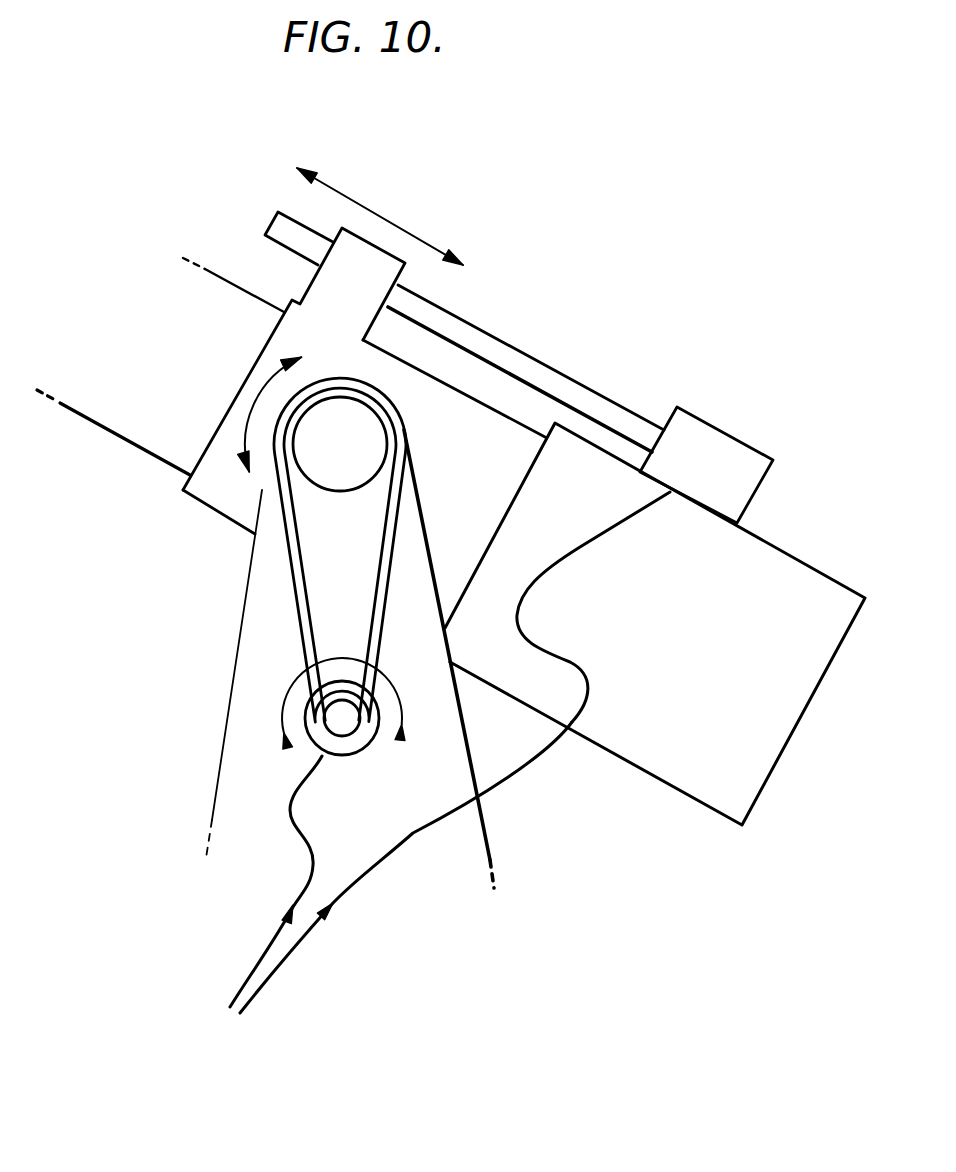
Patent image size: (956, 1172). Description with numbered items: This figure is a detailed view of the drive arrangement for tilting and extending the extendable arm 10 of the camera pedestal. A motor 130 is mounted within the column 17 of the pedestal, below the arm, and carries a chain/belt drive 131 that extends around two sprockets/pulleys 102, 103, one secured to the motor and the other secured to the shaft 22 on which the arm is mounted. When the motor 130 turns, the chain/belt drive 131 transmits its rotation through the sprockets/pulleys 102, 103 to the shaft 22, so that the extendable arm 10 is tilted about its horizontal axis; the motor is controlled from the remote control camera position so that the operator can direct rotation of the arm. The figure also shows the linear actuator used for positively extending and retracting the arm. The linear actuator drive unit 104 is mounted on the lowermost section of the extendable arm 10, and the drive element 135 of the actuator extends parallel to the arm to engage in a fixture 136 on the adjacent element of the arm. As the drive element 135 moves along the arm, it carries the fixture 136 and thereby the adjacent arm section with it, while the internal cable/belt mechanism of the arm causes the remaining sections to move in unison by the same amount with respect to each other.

The extendable arm 10 is at (132, 430).
The column 17 is at (468, 832).
The shaft 22 is at (315, 423).
The sprocket/pulley 102 is at (322, 721).
The sprocket/pulley 103 is at (361, 448).
The linear actuator drive unit 104 is at (665, 343).
The motor 130 is at (305, 716).
The chain/belt drive 131 is at (297, 595).
The drive element 135 is at (498, 342).
The fixture 136 is at (342, 273).